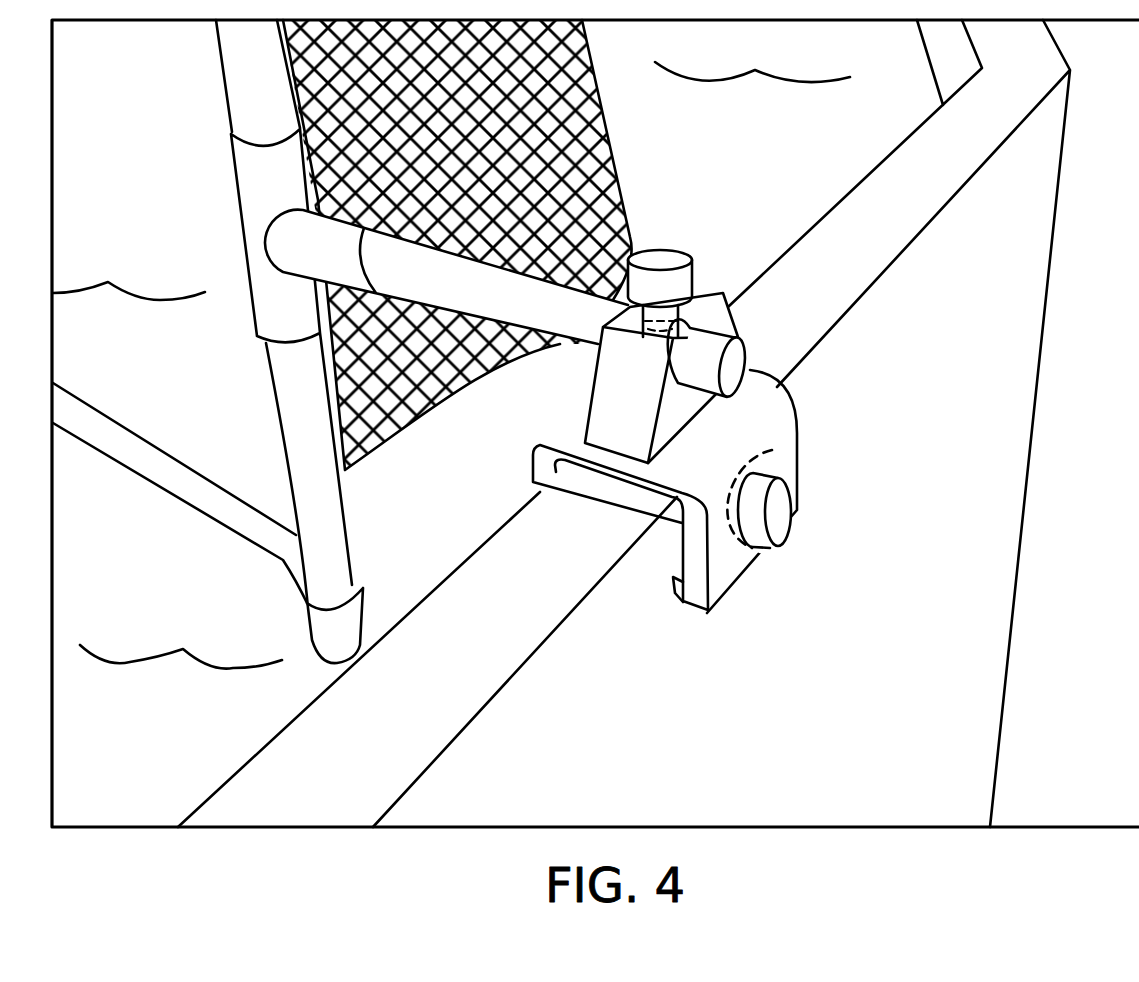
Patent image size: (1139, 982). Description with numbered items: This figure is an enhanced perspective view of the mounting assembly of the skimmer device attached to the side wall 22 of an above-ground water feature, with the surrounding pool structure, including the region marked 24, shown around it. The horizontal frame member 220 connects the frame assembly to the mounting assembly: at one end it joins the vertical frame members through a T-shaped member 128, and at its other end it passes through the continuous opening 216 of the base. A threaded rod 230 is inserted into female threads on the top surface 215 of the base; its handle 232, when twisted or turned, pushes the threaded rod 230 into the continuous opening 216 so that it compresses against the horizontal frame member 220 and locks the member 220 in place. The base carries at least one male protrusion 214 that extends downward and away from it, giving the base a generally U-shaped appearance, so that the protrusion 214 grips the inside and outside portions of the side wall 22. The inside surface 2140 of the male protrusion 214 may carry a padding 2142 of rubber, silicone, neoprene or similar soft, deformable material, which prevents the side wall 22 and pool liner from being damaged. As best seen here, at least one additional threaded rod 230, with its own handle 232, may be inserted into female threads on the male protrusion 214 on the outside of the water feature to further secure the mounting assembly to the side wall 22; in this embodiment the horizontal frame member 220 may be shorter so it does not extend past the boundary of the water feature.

The side wall 22 is at (920, 395).
The frame board 24 is at (440, 687).
The T-shaped member 128 is at (288, 292).
The male protrusion 214 is at (717, 548).
The top surface 215 is at (703, 300).
The continuous opening 216 is at (590, 345).
The horizontal frame member 220 is at (438, 277).
The threaded rod 230 is at (740, 335).
The handle 232 is at (655, 268).
The inside surface 2140 is at (533, 485).
The padding 2142 is at (667, 588).